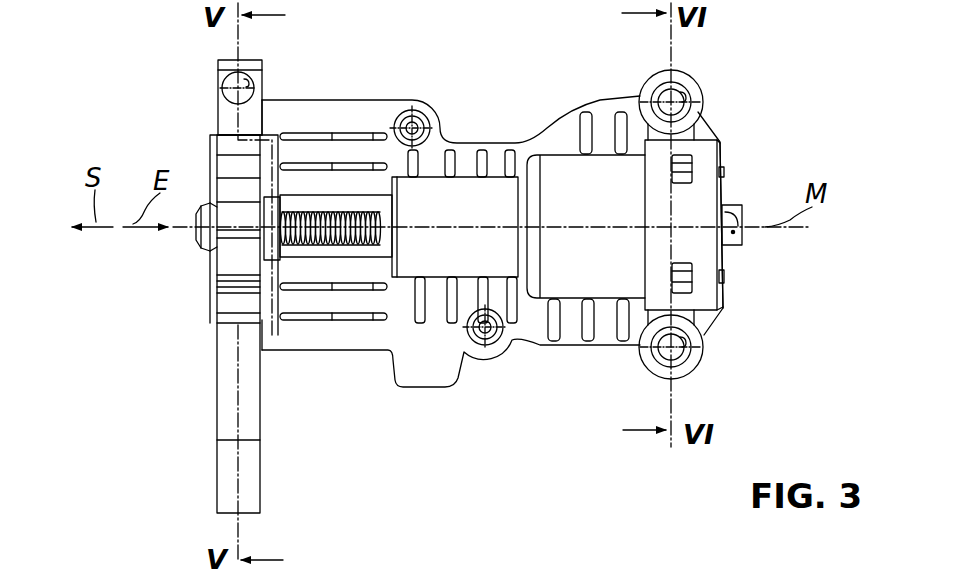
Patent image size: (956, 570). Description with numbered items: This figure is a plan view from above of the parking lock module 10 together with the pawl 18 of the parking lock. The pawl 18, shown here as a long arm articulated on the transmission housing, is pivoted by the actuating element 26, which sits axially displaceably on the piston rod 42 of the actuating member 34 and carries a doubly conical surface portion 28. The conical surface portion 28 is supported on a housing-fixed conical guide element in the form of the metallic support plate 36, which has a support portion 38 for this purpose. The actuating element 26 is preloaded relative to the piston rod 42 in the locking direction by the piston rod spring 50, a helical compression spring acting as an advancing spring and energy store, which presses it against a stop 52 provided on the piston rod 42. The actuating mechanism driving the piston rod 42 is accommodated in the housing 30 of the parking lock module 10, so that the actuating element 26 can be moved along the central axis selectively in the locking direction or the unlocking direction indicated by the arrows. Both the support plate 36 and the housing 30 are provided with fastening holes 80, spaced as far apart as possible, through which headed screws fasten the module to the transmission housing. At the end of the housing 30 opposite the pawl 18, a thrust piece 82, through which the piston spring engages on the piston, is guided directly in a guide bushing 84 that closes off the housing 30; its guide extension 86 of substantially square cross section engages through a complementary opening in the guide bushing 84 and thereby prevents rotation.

The parking lock module 10 is at (531, 86).
The pawl 18 is at (216, 428).
The actuating element 26 is at (196, 241).
The conical surface portion 28 is at (216, 243).
The housing 30 is at (463, 178).
The actuating member 34 is at (339, 205).
The support plate 36 is at (263, 64).
The support portion 38 is at (265, 266).
The piston rod 42 is at (339, 257).
The piston rod spring 50 is at (330, 203).
The stop 52 is at (213, 203).
The fastening holes 80 is at (246, 86).
The thrust piece 82 is at (729, 205).
The guide bushing 84 is at (723, 189).
The guide extension 86 is at (734, 233).